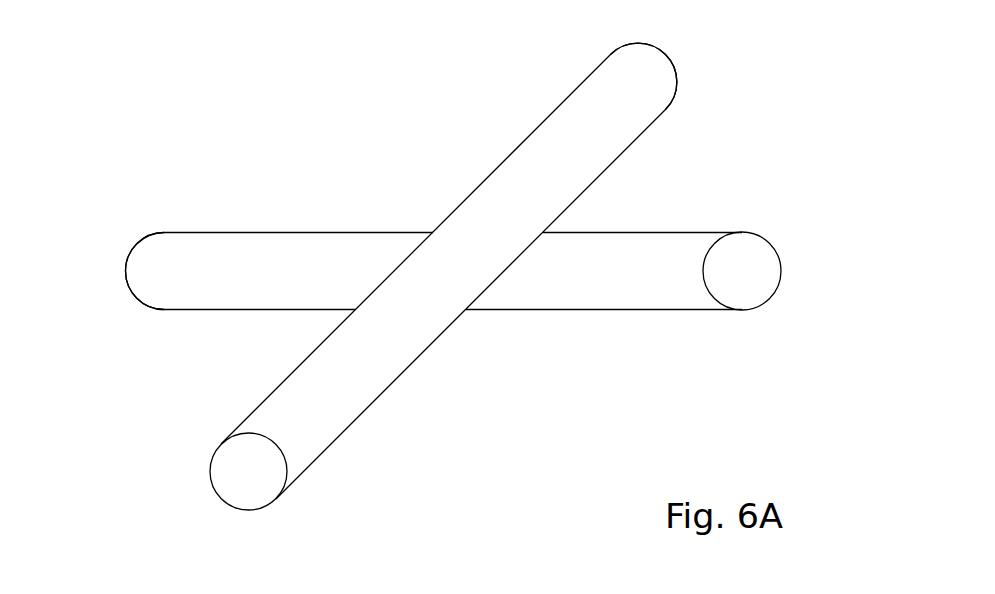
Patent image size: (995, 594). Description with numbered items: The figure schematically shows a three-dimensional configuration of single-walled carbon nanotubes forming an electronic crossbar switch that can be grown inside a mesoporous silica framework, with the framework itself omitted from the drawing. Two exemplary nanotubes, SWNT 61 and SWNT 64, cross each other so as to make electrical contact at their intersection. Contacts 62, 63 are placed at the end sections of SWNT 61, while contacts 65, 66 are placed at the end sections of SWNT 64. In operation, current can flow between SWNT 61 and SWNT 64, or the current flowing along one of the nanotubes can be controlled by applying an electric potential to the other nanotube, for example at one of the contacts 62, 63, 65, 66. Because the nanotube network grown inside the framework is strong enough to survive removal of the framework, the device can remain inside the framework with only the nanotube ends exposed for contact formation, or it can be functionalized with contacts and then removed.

The SWNT 61 is at (553, 310).
The contact 62 is at (127, 273).
The contact 63 is at (778, 288).
The SWNT 64 is at (515, 147).
The contact 65 is at (222, 500).
The contact 66 is at (678, 82).